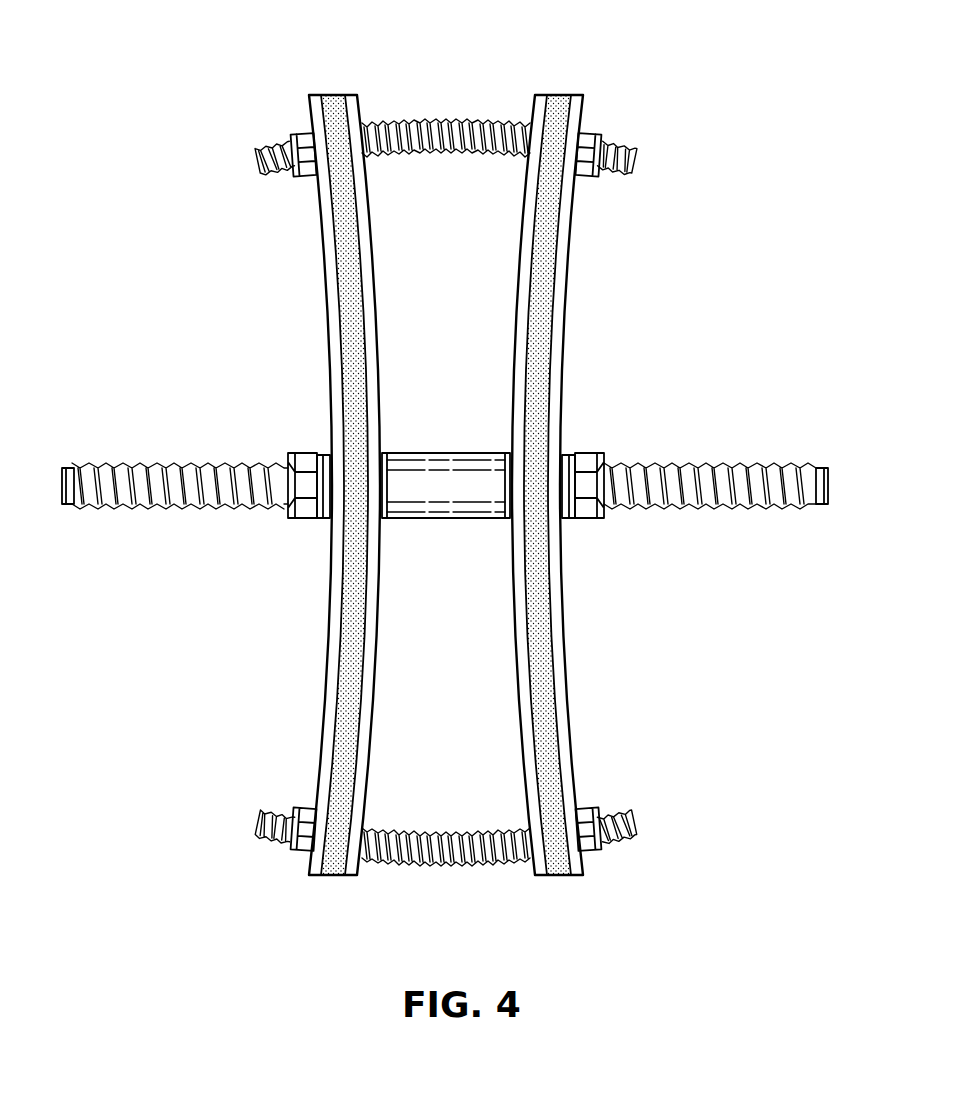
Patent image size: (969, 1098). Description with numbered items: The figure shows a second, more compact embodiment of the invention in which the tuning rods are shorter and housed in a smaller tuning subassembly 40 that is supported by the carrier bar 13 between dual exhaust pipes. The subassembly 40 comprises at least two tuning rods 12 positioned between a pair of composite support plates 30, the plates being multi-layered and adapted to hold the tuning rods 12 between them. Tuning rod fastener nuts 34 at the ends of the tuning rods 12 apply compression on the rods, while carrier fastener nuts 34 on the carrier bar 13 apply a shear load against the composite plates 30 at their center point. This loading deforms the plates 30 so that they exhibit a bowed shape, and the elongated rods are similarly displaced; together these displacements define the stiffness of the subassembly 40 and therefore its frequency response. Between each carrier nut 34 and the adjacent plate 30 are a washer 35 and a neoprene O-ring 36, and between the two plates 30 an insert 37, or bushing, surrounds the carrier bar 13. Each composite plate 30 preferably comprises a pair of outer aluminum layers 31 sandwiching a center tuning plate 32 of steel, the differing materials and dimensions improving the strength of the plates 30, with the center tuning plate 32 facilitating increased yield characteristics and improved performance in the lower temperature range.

The tuning rod 12 is at (455, 122).
The carrier bar 13 is at (715, 510).
The composite support plate 30 is at (453, 485).
The outer aluminum layer 31 is at (370, 212).
The center tuning plate 32 is at (356, 333).
The fastener nut 34 is at (298, 133).
The washer 35 is at (317, 520).
The neoprene O-ring 36 is at (327, 453).
The insert 37 is at (443, 453).
The tuning subassembly 40 is at (748, 76).